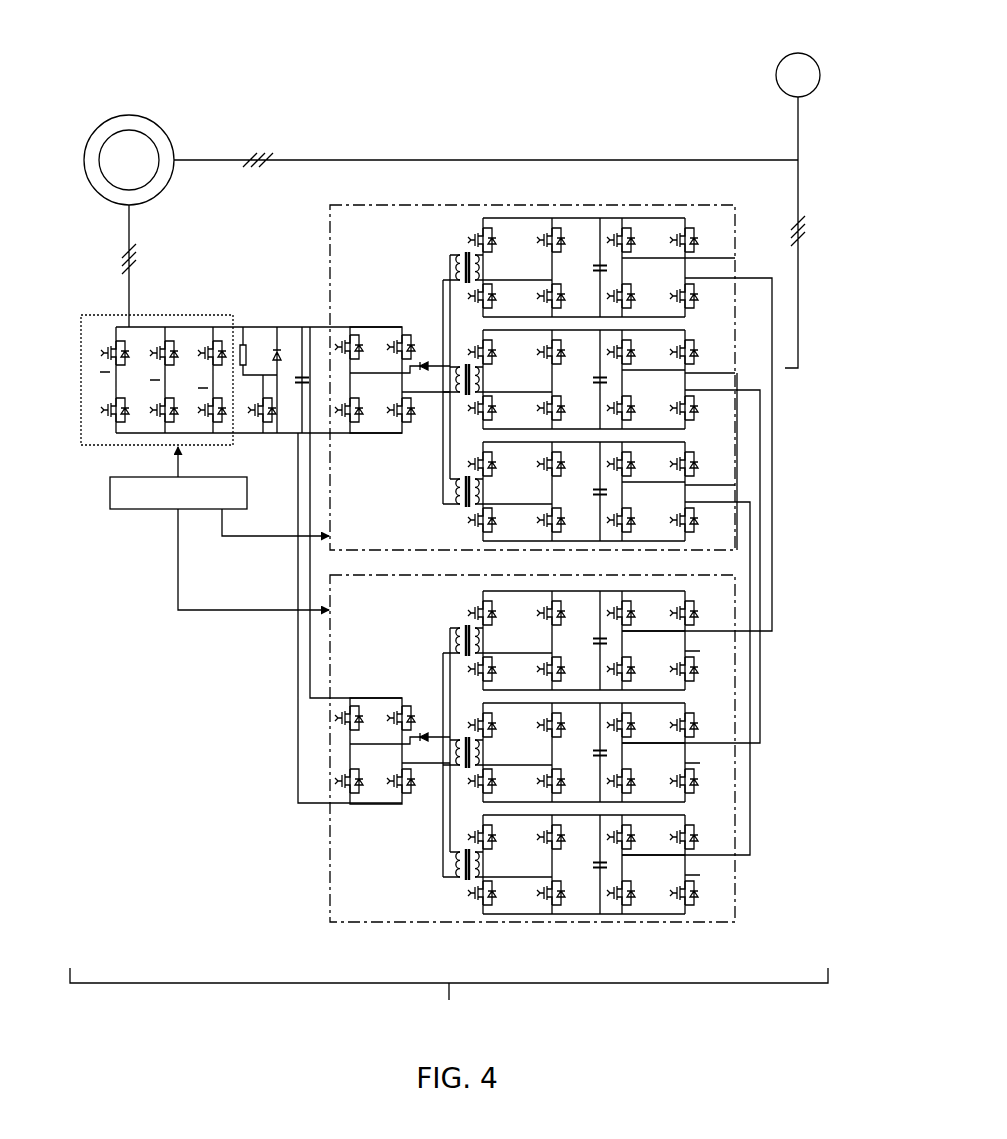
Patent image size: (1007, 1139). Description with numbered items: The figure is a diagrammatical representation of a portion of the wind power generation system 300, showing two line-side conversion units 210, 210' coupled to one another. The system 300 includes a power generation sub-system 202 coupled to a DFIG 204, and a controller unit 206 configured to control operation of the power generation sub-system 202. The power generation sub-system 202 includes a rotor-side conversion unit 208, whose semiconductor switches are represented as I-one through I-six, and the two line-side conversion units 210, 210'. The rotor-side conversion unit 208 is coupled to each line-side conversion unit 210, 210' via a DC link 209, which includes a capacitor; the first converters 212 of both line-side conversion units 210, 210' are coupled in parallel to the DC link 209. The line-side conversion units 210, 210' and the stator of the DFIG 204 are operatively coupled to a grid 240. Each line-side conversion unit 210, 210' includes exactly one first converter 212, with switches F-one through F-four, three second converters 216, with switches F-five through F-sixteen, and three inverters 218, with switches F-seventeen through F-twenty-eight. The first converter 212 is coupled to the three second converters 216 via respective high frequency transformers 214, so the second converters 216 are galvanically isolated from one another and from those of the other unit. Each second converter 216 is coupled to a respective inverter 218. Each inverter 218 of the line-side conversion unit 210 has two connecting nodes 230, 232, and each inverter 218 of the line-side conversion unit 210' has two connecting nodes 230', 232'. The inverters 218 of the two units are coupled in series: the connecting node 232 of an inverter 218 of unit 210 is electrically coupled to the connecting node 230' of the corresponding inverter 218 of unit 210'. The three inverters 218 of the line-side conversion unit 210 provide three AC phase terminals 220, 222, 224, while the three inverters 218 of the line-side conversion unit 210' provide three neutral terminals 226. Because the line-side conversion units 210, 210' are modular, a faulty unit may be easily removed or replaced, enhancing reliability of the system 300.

The wind power generation system 300 is at (198, 28).
The power generation sub-system 202 is at (449, 1000).
The DFIG 204 is at (170, 115).
The controller unit 206 is at (147, 510).
The rotor-side conversion unit 208 is at (160, 315).
The DC link 209 is at (302, 350).
The line-side conversion unit 210 is at (501, 377).
The line-side conversion unit 210' is at (503, 748).
The first converter 212 is at (384, 328).
The high frequency transformer 214 is at (465, 288).
The second converter 216 is at (515, 368).
The inverter 218 is at (692, 302).
The AC phase terminal 220 is at (733, 255).
The AC phase terminal 222 is at (727, 376).
The AC phase terminal 224 is at (733, 484).
The neutral terminal 226 is at (695, 650).
The connecting node 230 is at (581, 380).
The connecting node 230' is at (582, 753).
The connecting node 232 is at (707, 538).
The connecting node 232' is at (763, 770).
The grid 240 is at (775, 72).